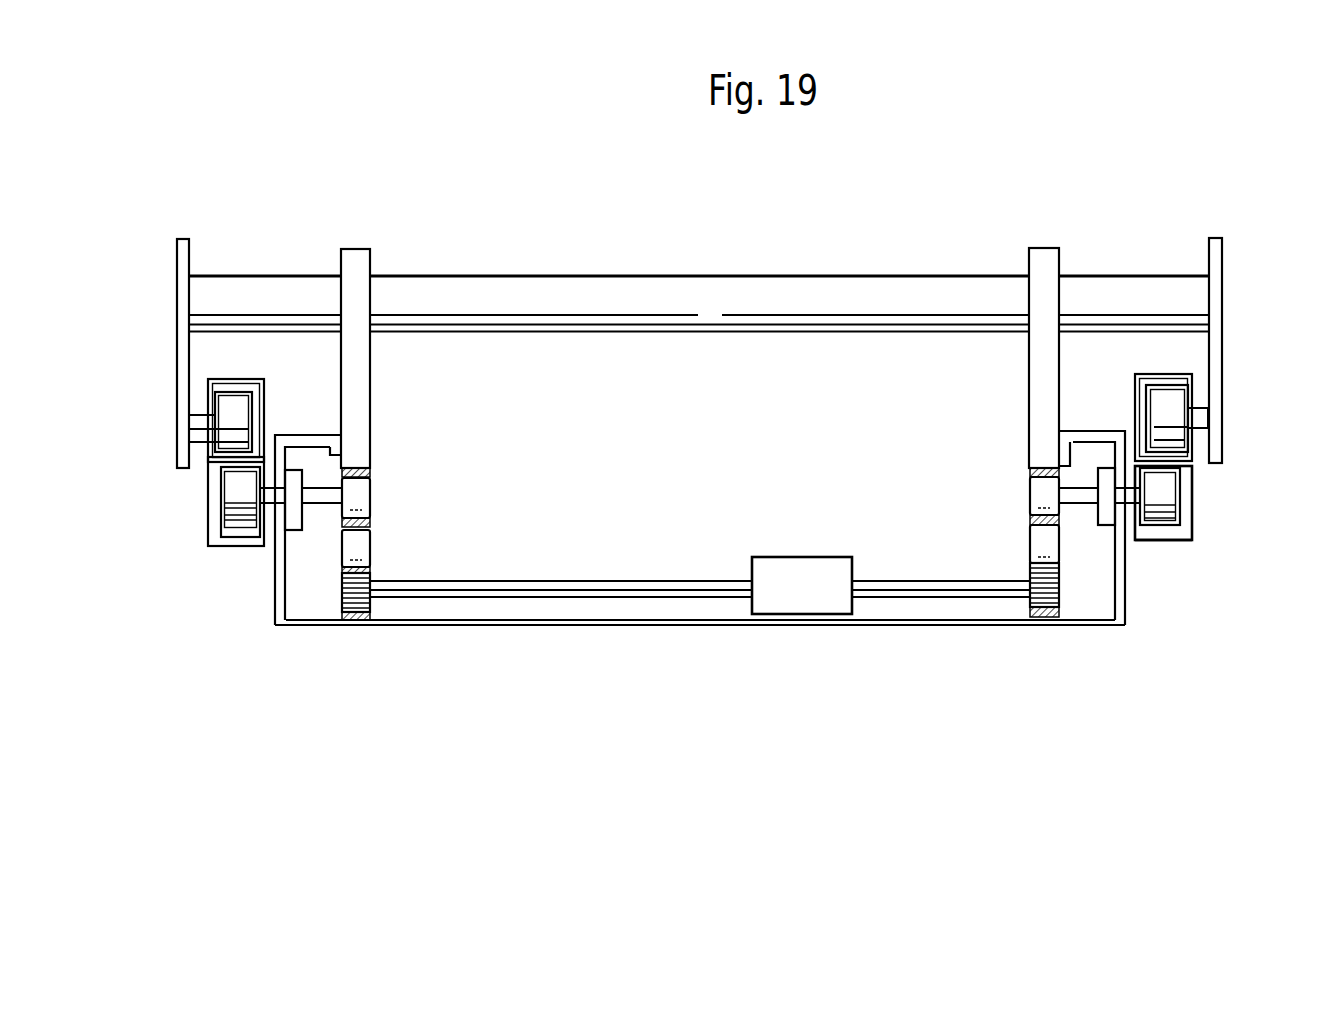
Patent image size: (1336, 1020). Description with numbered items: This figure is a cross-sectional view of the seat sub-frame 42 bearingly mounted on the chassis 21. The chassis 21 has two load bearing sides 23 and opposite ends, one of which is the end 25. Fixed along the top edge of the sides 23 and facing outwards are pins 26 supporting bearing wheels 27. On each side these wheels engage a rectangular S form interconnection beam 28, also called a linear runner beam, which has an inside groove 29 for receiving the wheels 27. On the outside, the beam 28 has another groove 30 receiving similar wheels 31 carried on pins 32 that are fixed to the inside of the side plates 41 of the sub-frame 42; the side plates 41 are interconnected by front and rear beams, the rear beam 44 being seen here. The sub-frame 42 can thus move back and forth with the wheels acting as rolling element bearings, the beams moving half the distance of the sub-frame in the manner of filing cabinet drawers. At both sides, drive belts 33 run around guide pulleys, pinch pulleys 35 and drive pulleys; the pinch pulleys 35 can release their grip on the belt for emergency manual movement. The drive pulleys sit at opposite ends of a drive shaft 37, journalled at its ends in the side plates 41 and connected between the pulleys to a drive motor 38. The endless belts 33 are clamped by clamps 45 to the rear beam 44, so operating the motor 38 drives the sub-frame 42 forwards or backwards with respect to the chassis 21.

The chassis 21 is at (946, 631).
The load bearing sides 23 is at (275, 590).
The end 25 is at (633, 625).
The pins 26 is at (262, 503).
The bearing wheels 27 is at (1163, 492).
The interconnection beam 28 is at (252, 383).
The inside groove 29 is at (1160, 540).
The groove 30 is at (233, 383).
The wheels 31 is at (228, 438).
The pins 32 is at (200, 420).
The drive belts 33 is at (355, 472).
The pinch pulleys 35 is at (355, 548).
The drive shaft 37 is at (578, 590).
The drive motor 38 is at (798, 572).
The side plates 41 is at (177, 273).
The sub-frame 42 is at (881, 264).
The rear beam 44 is at (635, 295).
The clamps 45 is at (352, 265).